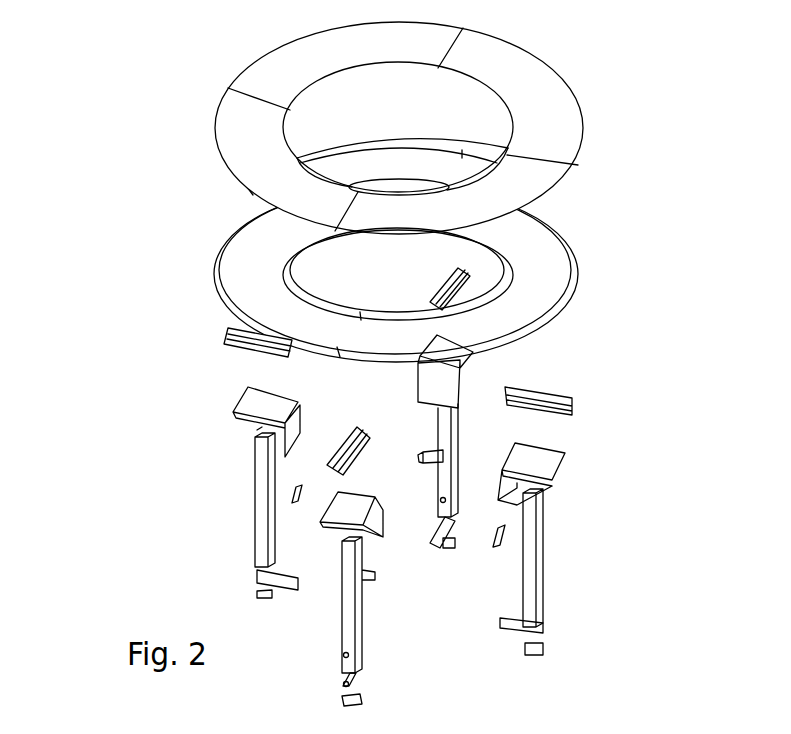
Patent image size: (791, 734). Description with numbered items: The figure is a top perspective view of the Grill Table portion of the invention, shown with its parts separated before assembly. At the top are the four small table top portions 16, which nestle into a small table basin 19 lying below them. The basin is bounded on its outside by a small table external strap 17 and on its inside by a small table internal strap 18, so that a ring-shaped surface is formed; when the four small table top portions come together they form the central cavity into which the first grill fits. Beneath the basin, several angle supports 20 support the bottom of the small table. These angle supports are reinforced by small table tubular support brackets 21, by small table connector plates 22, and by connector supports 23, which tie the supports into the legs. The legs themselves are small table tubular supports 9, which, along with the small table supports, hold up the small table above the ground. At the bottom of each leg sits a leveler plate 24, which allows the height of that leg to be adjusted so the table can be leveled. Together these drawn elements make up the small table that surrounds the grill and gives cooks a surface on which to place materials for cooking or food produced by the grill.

The small table tubular support 9 is at (543, 628).
The small table top portion 16 is at (577, 167).
The small table external strap 17 is at (220, 220).
The small table internal strap 18 is at (503, 224).
The small table basin 19 is at (257, 252).
The angle support 20 is at (338, 473).
The small table tubular support bracket 21 is at (380, 535).
The small table connector plate 22 is at (452, 463).
The connector support 23 is at (364, 686).
The leveler plate 24 is at (356, 700).